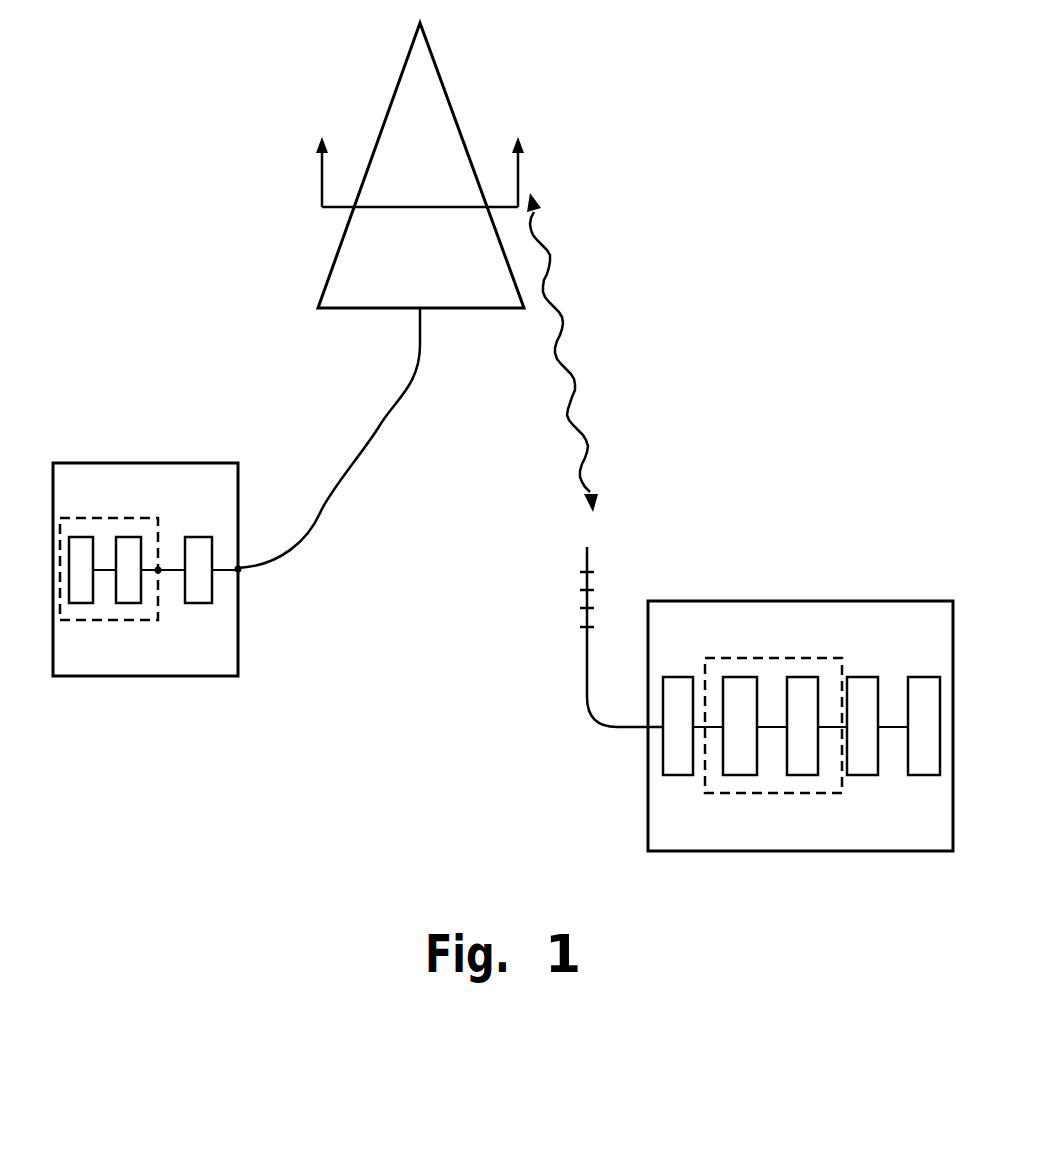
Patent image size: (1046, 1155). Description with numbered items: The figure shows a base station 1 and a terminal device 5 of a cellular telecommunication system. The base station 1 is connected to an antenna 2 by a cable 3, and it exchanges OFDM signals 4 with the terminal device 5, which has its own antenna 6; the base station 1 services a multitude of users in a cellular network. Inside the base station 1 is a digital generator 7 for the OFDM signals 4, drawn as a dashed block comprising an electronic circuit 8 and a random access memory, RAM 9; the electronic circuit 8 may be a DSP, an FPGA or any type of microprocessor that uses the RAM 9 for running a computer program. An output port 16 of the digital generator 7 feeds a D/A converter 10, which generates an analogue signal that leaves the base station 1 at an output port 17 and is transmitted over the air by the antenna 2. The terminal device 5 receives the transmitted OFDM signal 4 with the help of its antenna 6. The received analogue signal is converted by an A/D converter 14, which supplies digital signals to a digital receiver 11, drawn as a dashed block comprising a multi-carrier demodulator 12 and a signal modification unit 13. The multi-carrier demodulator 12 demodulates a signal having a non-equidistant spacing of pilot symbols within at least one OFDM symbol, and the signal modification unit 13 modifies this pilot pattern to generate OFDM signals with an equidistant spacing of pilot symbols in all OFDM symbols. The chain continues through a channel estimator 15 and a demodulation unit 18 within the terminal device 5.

The base station 1 is at (60, 676).
The antenna 2 is at (437, 63).
The cable 3 is at (317, 517).
The OFDM signal 4 is at (582, 310).
The terminal device 5 is at (648, 822).
The antenna 6 is at (585, 668).
The digital generator 7 is at (133, 620).
The electronic circuit 8 is at (124, 537).
The RAM 9 is at (73, 537).
The D/A converter 10 is at (198, 603).
The digital receiver 11 is at (745, 793).
The multi-carrier demodulator 12 is at (733, 677).
The signal modification unit 13 is at (797, 677).
The A/D converter 14 is at (673, 677).
The channel estimator 15 is at (860, 677).
The output port 16 is at (158, 570).
The output port 17 is at (238, 570).
The demodulation unit 18 is at (915, 677).